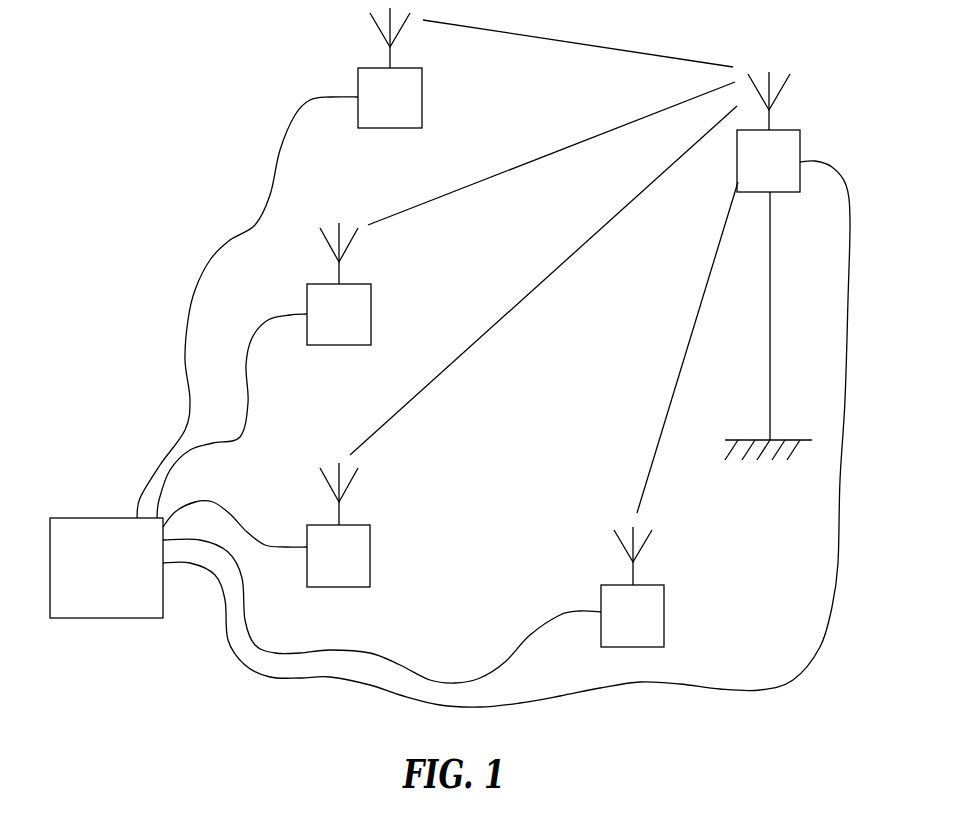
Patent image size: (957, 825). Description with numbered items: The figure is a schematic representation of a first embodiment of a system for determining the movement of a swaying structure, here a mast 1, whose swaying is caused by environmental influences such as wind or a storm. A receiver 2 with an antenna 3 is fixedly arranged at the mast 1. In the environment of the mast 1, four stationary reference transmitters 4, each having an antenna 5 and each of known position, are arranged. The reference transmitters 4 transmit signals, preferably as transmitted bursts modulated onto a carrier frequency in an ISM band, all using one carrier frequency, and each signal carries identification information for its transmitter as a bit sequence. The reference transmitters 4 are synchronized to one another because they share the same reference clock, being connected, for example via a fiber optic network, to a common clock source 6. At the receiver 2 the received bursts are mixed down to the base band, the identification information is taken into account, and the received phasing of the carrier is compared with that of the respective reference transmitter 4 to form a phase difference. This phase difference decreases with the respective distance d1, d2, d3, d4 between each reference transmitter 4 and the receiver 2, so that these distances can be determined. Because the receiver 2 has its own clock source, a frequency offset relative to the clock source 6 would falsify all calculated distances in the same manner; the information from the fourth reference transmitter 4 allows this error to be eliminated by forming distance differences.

The mast 1 is at (771, 316).
The receiver 2 is at (800, 146).
The antenna 3 is at (780, 95).
The reference transmitter 4 is at (390, 128).
The antenna 5 is at (382, 30).
The clock source 6 is at (92, 517).
The distance d1 is at (578, 42).
The distance d2 is at (550, 155).
The distance d3 is at (544, 279).
The distance d4 is at (688, 340).